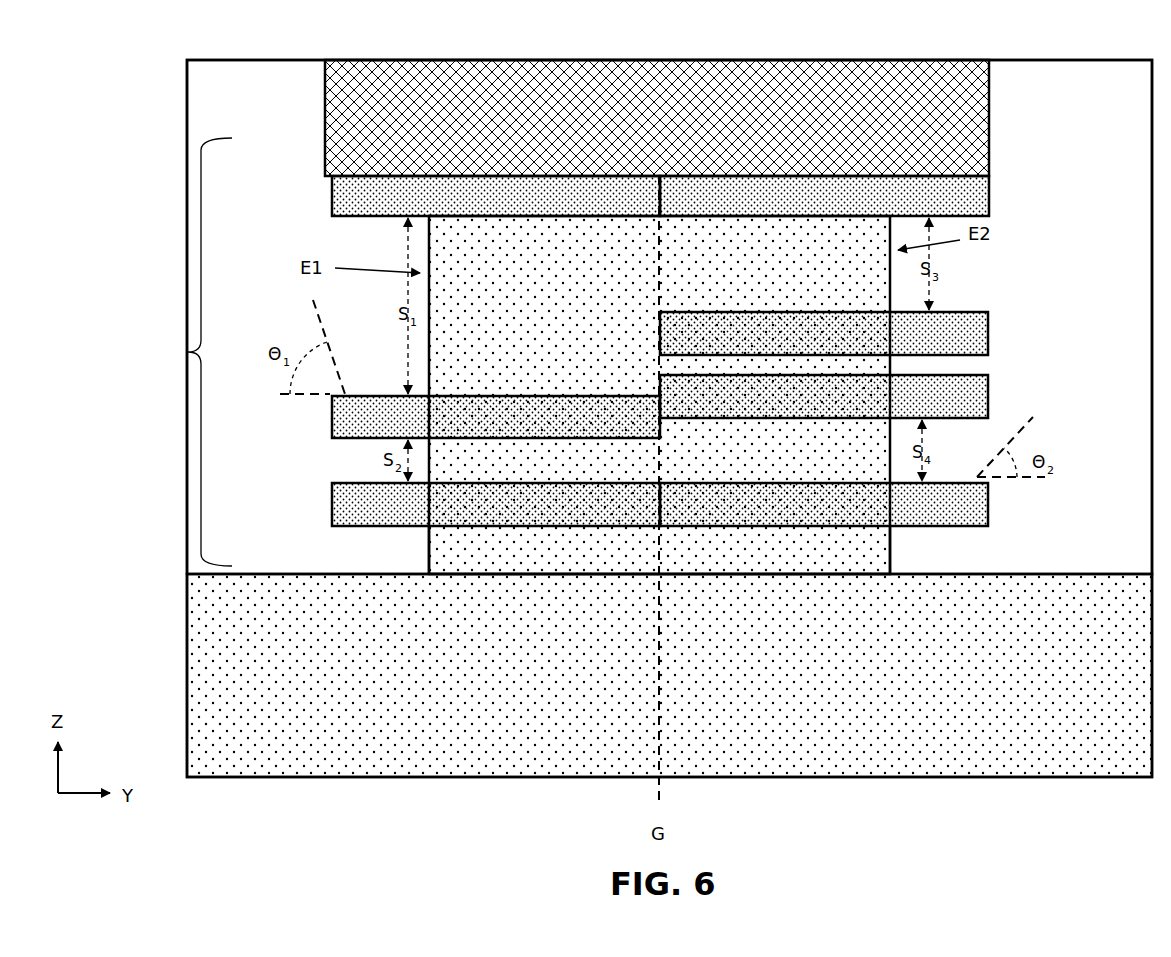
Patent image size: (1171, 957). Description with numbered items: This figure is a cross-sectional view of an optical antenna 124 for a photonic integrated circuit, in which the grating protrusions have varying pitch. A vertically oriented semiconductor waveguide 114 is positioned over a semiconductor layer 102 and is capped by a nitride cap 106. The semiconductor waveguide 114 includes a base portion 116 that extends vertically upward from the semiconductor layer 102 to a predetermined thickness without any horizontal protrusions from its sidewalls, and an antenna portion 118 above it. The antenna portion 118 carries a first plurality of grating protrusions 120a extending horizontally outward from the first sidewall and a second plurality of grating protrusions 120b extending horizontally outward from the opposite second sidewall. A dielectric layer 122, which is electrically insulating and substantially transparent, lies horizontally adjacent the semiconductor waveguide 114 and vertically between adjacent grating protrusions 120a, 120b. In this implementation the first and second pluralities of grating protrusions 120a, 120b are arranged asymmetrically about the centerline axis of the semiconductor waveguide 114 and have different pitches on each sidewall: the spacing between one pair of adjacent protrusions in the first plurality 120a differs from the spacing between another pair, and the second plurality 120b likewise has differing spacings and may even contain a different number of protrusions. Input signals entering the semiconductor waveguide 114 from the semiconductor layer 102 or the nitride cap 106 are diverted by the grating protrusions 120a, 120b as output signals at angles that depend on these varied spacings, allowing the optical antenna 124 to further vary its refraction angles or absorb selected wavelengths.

The optical antenna 124 is at (158, 66).
The dielectric layer 122 is at (291, 104).
The semiconductor layer 102 is at (205, 670).
The antenna portion 118 is at (594, 309).
The base portion 116 is at (873, 558).
The nitride cap 106 is at (345, 168).
The first plurality of grating protrusions 120a is at (405, 190).
The second plurality of grating protrusions 120b is at (967, 190).
The semiconductor waveguide 114 is at (188, 352).